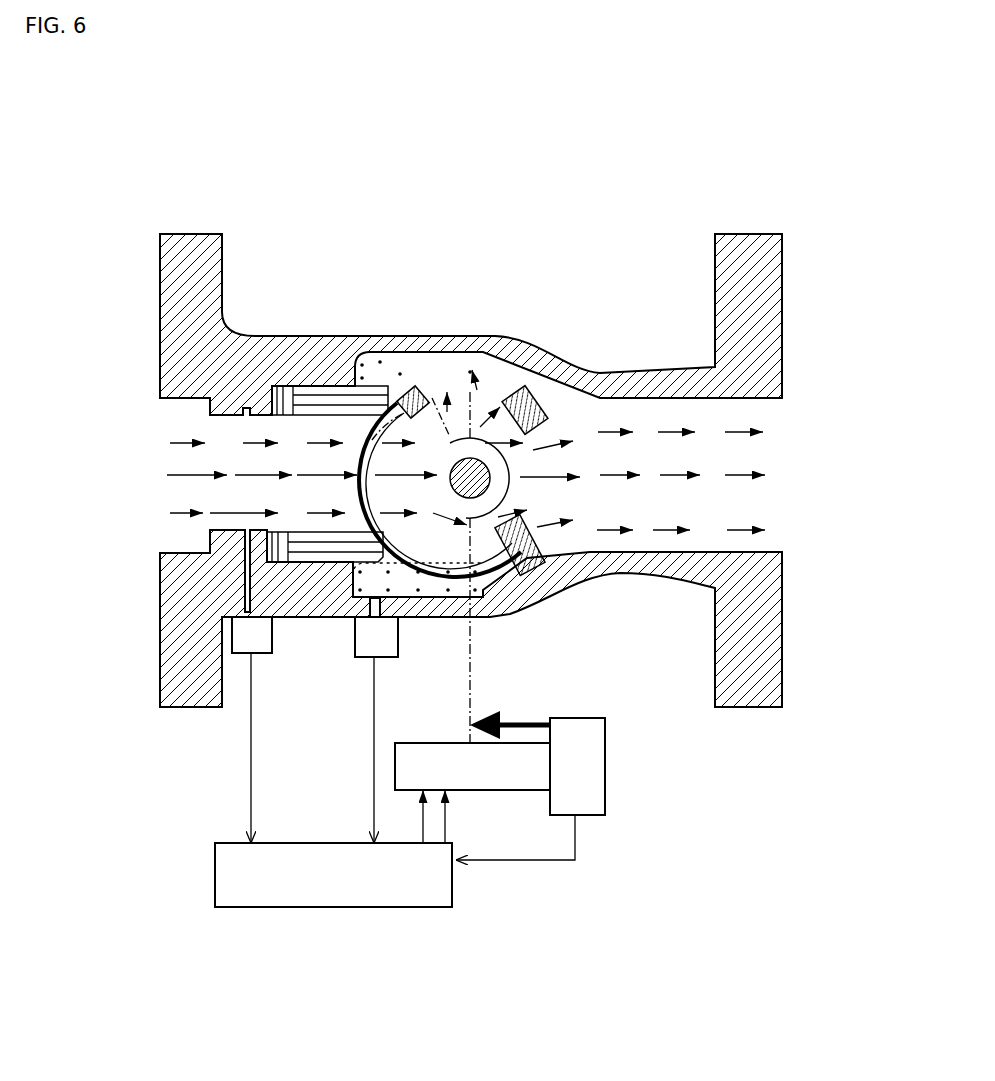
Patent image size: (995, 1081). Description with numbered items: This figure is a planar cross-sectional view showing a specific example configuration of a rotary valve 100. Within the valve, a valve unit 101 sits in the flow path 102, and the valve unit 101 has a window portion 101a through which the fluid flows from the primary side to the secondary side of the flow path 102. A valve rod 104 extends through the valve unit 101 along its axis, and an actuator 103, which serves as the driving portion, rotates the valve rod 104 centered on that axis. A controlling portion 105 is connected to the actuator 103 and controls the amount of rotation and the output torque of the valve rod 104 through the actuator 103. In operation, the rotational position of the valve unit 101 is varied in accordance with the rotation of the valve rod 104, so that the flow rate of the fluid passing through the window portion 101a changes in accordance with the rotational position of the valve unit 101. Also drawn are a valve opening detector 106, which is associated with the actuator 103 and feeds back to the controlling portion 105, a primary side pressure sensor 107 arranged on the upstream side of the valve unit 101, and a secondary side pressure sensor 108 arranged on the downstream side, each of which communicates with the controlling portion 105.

The rotary valve 100 is at (670, 178).
The valve unit 101 is at (490, 565).
The window portion 101a is at (378, 433).
The flow path 102 is at (752, 463).
The actuator 103 is at (493, 772).
The valve rod 104 is at (460, 440).
The controlling portion 105 is at (330, 885).
The valve opening detector 106 is at (585, 758).
The primary side pressure sensor 107 is at (247, 632).
The secondary side pressure sensor 108 is at (375, 640).